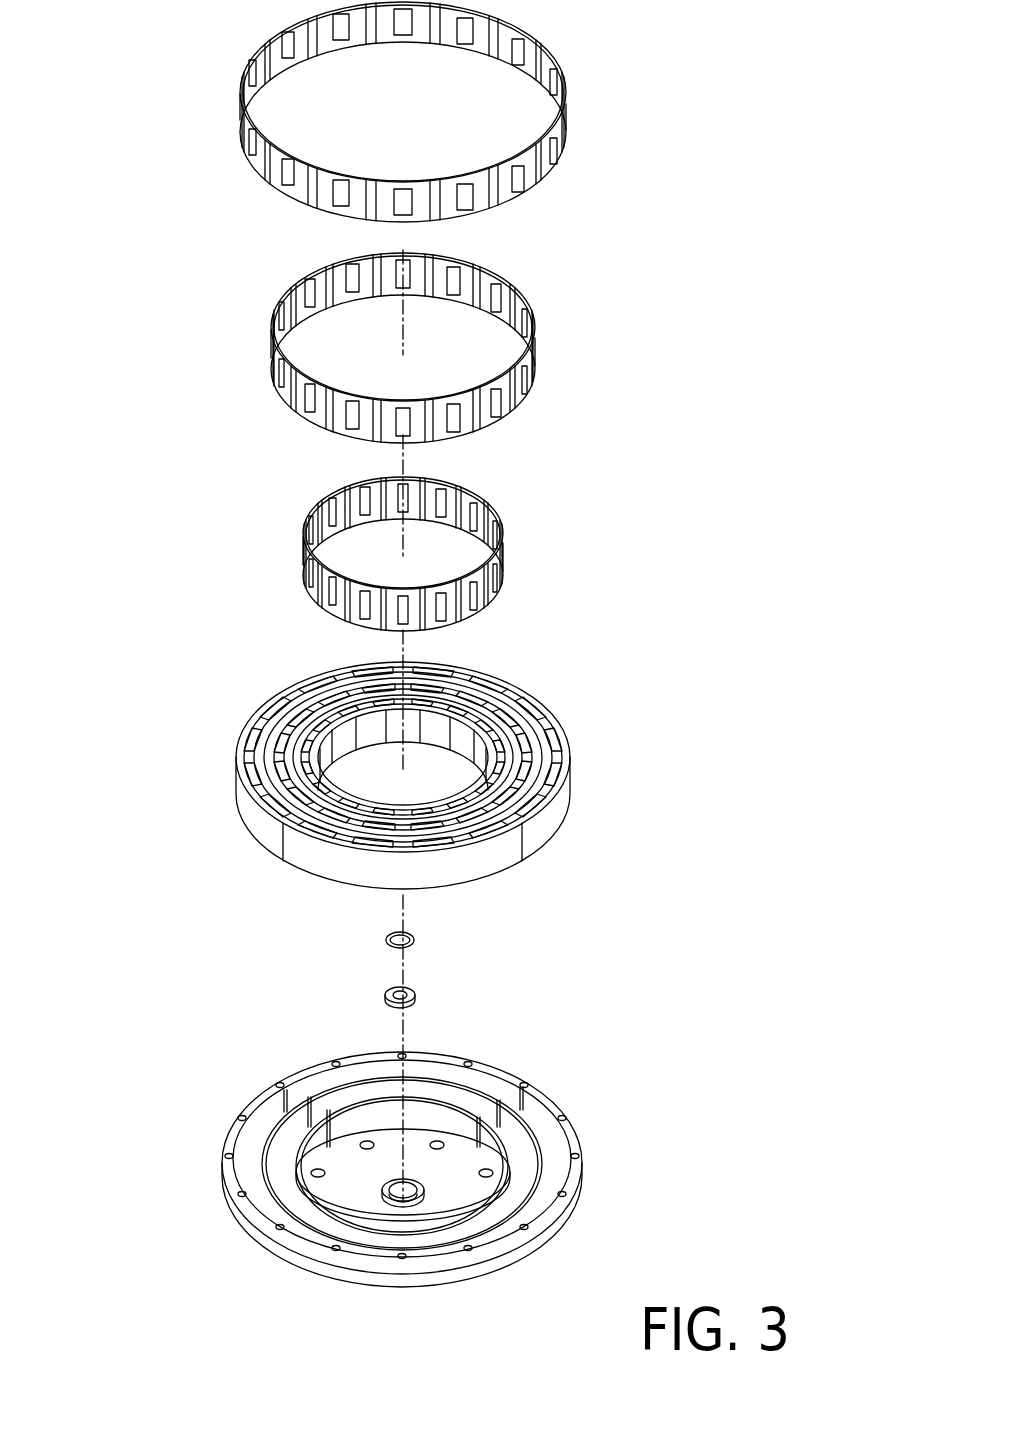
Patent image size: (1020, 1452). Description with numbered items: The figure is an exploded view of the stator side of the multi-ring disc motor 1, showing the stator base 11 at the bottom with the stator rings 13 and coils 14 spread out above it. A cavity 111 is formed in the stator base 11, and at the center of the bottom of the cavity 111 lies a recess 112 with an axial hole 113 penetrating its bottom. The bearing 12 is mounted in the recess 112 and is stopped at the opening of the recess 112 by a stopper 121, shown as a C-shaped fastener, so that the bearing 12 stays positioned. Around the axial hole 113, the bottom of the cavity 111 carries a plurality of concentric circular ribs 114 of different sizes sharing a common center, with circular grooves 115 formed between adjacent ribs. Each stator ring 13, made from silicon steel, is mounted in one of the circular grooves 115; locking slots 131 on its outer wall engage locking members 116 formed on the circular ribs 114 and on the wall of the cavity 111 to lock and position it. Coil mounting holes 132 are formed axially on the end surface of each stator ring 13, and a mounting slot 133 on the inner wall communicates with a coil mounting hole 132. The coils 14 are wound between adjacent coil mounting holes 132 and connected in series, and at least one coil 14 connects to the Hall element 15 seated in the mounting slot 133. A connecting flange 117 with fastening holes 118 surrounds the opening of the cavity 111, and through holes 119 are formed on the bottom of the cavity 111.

The multi-ring disc motor 1 is at (185, 432).
The stator base 11 is at (283, 1248).
The cavity 111 is at (462, 1177).
The recess 112 is at (398, 1187).
The axial hole 113 is at (400, 1205).
The concentric circular ribs 114 is at (277, 1205).
The circular grooves 115 is at (526, 1187).
The locking member 116 is at (307, 1127).
The connecting flange 117 is at (440, 1257).
The fastening holes 118 is at (527, 1230).
The through holes 119 is at (442, 1138).
The bearing 12 is at (385, 995).
The stopper 121 is at (414, 938).
The stator rings 13 is at (450, 693).
The locking slots 131 is at (283, 862).
The coil mounting holes 132 is at (246, 748).
The mounting slot 133 is at (287, 725).
The coils 14 is at (243, 150).
The Hall element 15 is at (366, 722).